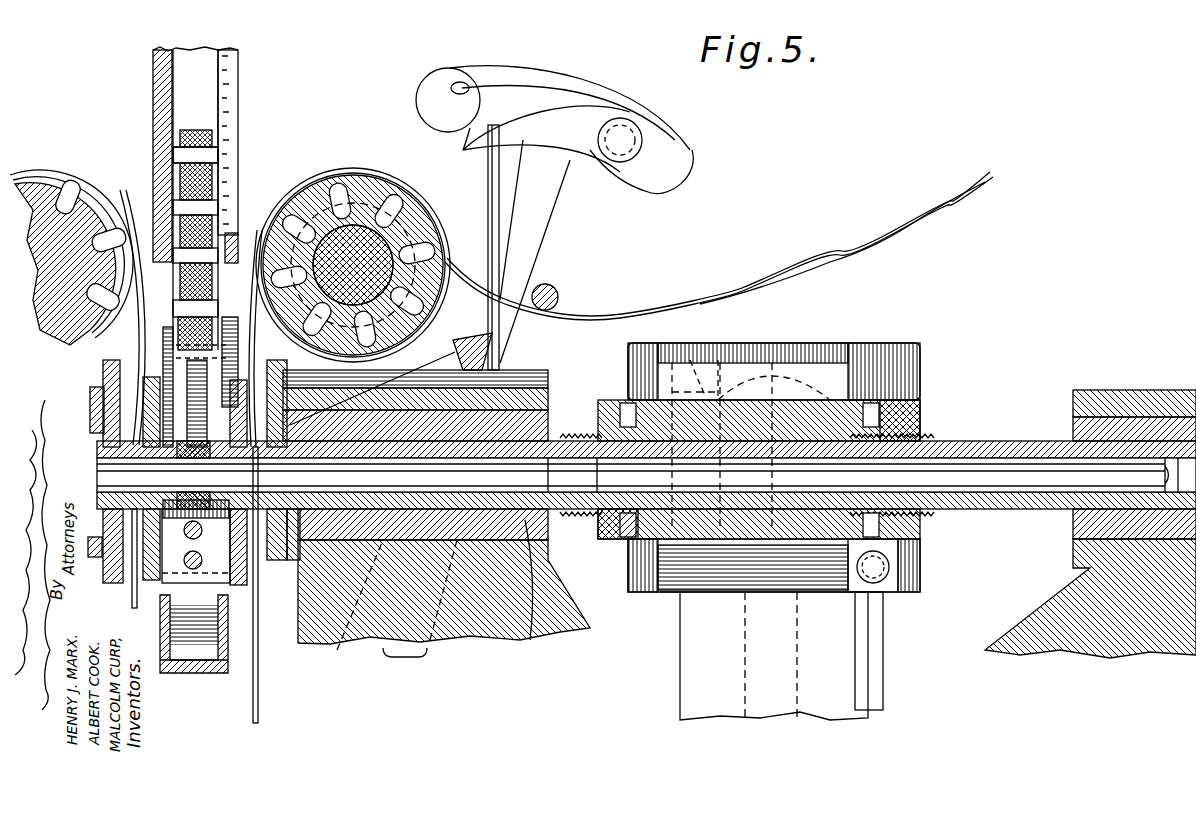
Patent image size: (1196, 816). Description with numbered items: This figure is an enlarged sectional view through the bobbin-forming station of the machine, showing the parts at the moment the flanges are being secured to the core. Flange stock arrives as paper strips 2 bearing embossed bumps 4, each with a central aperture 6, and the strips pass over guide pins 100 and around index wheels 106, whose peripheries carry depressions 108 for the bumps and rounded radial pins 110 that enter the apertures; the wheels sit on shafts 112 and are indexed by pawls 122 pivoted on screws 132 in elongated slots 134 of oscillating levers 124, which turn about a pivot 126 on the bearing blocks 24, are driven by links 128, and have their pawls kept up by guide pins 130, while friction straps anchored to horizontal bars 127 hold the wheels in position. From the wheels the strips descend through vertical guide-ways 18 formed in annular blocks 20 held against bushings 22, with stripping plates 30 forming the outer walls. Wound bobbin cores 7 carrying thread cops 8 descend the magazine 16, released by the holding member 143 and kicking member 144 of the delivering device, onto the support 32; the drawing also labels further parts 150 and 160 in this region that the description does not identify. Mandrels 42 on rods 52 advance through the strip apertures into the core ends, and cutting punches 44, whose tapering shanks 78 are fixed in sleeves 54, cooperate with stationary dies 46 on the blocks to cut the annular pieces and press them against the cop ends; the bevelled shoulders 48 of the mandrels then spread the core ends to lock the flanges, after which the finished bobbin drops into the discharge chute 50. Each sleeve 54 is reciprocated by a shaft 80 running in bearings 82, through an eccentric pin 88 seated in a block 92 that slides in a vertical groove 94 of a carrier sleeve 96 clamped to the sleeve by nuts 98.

The strips 2 is at (88, 196).
The bumps 4 is at (725, 298).
The central aperture 6 is at (660, 312).
The bobbin cores 7 is at (172, 200).
The cops 8 is at (190, 128).
The magazine or chute 16 is at (240, 100).
The guide-ways 18 is at (194, 634).
The annular blocks 20 is at (150, 565).
The bushings 22 is at (298, 645).
The bearing blocks 24 is at (552, 375).
The guide or stripping plates 30 is at (112, 348).
The support 32 is at (190, 520).
The mandrels 42 is at (103, 490).
The cutting punches 44 is at (103, 518).
The stationary cutting dies 46 is at (372, 383).
The bevelled shoulders 48 is at (203, 545).
The discharge chute 50 is at (160, 675).
The rods 52 is at (568, 522).
The sleeves 54 is at (1013, 440).
The tapering shanks 78 is at (552, 392).
The shafts 80 is at (918, 548).
The bearings 82 is at (853, 342).
The pin 88 is at (718, 360).
The block 92 is at (696, 360).
The vertical groove 94 is at (680, 596).
The carrier sleeve 96 is at (725, 405).
The clamping collars or nuts 98 is at (900, 420).
The guide pins 100 is at (560, 300).
The index wheels 106 is at (360, 190).
The depressions 108 is at (352, 185).
The radial pins 110 is at (392, 197).
The shafts 112 is at (395, 240).
The pawls 122 is at (505, 117).
The oscillating levers 124 is at (548, 125).
The lever pivot 126 is at (340, 655).
The horizontal bars 127 is at (490, 357).
The links 128 is at (884, 690).
The guide pins 130 is at (495, 183).
The screws 132 is at (648, 142).
The elongated slots 134 is at (445, 90).
The holding member 143 is at (228, 330).
The kicking member 144 is at (178, 327).
The spline 150 is at (170, 360).
The ring 160 is at (375, 272).